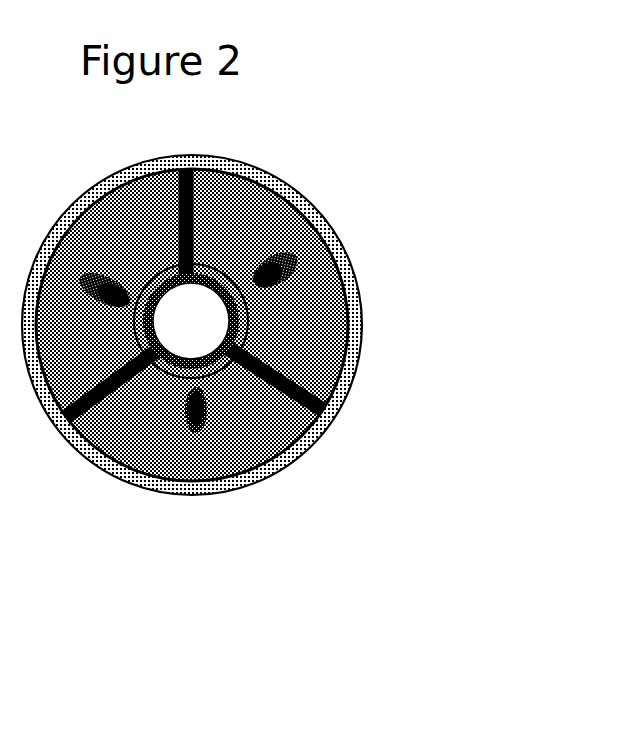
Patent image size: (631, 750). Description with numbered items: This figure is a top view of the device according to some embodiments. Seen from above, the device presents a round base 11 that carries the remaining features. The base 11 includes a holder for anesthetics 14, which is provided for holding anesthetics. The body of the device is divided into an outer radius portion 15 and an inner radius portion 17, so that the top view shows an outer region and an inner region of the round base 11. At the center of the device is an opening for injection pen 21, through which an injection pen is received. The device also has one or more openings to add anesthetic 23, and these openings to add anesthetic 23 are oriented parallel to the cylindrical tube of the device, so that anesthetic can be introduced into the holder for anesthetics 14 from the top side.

The base 11 is at (341, 403).
The holder for anesthetics 14 is at (256, 167).
The outer radius portion 15 is at (200, 327).
The inner radius portion 17 is at (145, 492).
The opening for injection pen 21 is at (354, 265).
The opening to add anesthetic 23 is at (243, 491).